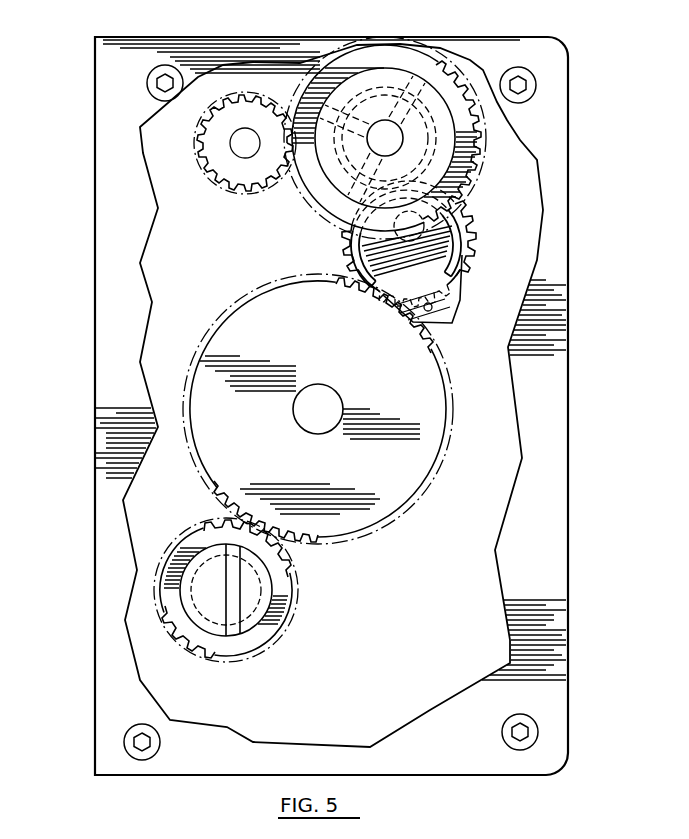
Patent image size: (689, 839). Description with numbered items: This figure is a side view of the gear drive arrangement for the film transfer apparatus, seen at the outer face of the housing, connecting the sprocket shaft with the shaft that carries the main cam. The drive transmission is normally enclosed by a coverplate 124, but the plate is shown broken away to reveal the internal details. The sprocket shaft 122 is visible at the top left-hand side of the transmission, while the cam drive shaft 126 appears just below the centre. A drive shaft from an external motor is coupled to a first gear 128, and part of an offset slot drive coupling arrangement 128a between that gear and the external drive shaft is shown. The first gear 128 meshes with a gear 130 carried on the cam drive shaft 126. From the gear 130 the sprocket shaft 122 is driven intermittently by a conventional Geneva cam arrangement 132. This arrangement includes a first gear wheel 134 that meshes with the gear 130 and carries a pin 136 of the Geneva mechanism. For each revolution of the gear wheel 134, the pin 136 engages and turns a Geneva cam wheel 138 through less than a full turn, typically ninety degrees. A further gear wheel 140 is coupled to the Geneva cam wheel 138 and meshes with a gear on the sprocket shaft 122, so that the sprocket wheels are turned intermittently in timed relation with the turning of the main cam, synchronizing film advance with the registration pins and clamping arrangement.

The sprocket shaft 122 is at (244, 152).
The coverplate 124 is at (105, 291).
The cam drive shaft 126 is at (327, 400).
The first gear 128 is at (289, 574).
The offset slot drive coupling 128a is at (250, 601).
The gear 130 is at (432, 383).
The Geneva cam arrangement 132 is at (475, 223).
The first gear wheel 134 is at (478, 240).
The pin 136 is at (445, 318).
The Geneva cam wheel 138 is at (425, 103).
The further gear wheel 140 is at (472, 72).